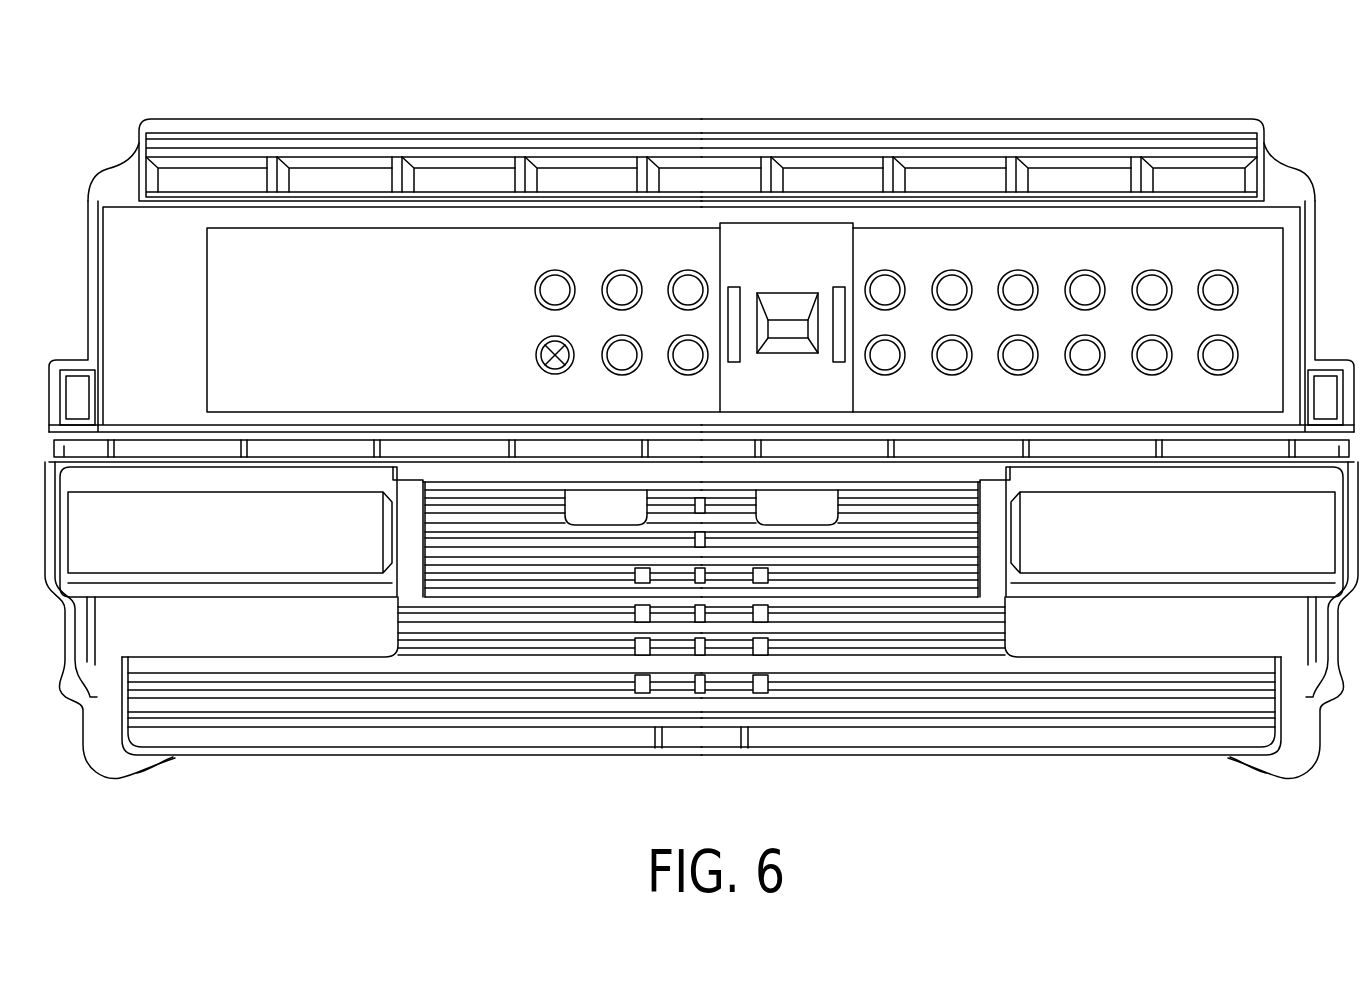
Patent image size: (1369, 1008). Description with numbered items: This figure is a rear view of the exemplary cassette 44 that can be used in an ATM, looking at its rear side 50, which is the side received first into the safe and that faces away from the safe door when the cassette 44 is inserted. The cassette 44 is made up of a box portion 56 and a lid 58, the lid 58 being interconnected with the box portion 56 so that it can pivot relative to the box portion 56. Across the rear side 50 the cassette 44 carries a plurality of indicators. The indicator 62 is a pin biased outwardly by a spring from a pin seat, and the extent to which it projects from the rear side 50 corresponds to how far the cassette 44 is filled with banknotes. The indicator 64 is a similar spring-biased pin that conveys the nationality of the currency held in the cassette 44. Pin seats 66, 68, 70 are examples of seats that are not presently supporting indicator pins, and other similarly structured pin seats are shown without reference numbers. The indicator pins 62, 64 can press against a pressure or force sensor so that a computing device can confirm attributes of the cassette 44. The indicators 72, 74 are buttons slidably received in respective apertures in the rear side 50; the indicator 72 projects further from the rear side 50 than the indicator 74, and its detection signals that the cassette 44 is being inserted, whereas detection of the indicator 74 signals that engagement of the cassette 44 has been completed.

The cassette 44 is at (952, 794).
The rear side 50 is at (180, 312).
The box portion 56 is at (282, 645).
The lid 58 is at (199, 119).
The indicator 62 is at (1223, 282).
The indicator 64 is at (537, 350).
The pin seat 66 is at (622, 287).
The pin seat 68 is at (1152, 355).
The pin seat 70 is at (1017, 290).
The indicator 72 is at (686, 288).
The indicator 74 is at (888, 288).